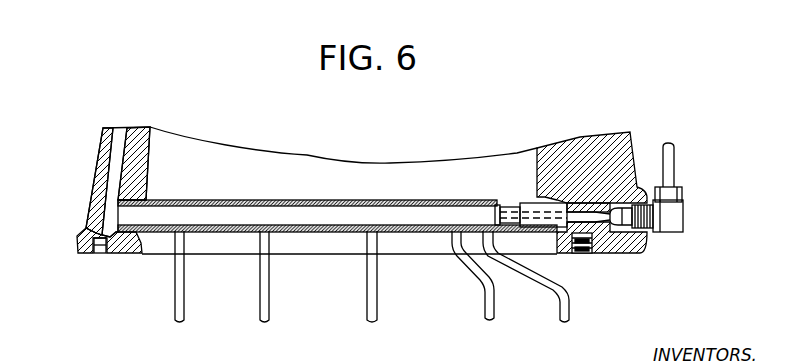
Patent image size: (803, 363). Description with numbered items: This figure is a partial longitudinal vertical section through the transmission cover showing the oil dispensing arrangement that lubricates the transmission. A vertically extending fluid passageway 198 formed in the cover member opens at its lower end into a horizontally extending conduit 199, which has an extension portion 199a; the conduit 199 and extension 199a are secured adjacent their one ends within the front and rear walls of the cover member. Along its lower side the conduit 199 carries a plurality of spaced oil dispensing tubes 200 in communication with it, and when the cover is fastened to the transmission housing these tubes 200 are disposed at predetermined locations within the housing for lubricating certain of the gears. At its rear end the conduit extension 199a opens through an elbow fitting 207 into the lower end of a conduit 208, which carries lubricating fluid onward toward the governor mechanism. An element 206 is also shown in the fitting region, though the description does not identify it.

The vertically extending fluid passageway 198 is at (113, 168).
The horizontally extending conduit 199 is at (317, 212).
The extension portion 199a is at (538, 210).
The oil dispensing tubes 200 is at (367, 308).
The check valve 206 is at (600, 217).
The elbow fitting 207 is at (675, 215).
The conduit 208 is at (673, 168).